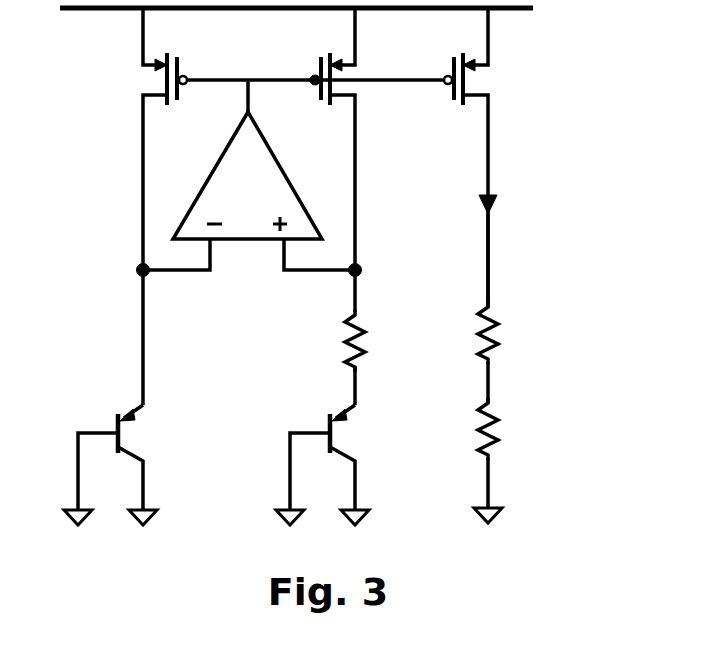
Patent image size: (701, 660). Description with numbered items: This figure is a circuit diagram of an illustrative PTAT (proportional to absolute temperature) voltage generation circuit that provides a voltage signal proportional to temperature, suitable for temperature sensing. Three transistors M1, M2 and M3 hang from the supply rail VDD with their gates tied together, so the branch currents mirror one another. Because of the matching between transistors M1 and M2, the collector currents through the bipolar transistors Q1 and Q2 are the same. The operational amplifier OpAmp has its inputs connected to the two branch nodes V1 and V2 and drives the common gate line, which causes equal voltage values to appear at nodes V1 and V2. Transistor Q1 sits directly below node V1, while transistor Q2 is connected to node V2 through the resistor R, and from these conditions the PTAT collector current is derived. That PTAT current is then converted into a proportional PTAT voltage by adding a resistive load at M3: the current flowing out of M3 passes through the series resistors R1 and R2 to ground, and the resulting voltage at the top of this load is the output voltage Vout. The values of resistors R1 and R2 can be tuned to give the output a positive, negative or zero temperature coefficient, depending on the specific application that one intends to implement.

The supply voltage rail VDD is at (328, 11).
The transistor M1 is at (141, 139).
The transistor M2 is at (354, 139).
The transistor M3 is at (489, 157).
The operational amplifier OpAmp is at (249, 175).
The node V1 is at (123, 273).
The node V2 is at (376, 273).
The output voltage Vout is at (515, 260).
The resistor R is at (371, 337).
The resistor R1 is at (506, 352).
The resistor R2 is at (504, 460).
The transistor Q1 is at (120, 397).
The transistor Q2 is at (341, 458).